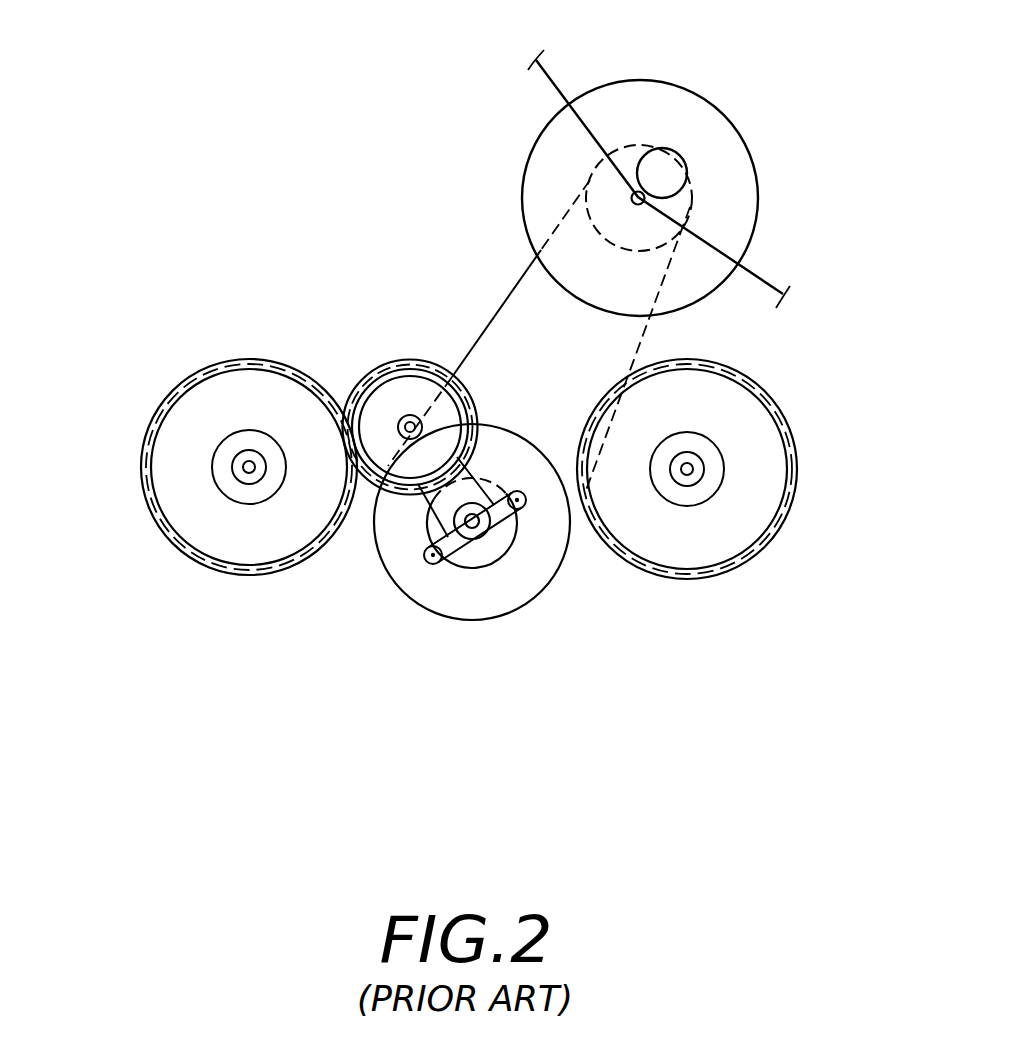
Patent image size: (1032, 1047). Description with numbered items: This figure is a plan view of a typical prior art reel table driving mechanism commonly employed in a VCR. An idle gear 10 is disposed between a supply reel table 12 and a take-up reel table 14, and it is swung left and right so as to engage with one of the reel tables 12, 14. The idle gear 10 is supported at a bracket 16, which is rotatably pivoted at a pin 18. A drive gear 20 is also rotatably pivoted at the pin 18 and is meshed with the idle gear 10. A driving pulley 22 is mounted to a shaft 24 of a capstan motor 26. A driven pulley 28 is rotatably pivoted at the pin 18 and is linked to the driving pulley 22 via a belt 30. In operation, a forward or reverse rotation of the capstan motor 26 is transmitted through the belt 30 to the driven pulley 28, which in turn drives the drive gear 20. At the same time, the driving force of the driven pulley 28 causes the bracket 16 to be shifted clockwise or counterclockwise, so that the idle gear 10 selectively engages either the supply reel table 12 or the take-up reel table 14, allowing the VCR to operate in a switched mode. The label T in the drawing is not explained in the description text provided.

The idle gear 10 is at (400, 359).
The supply reel table 12 is at (152, 518).
The take-up reel table 14 is at (788, 522).
The bracket 16 is at (450, 513).
The pin 18 is at (472, 527).
The drive gear 20 is at (513, 542).
The driving pulley 22 is at (640, 146).
The shaft 24 is at (632, 196).
The capstan motor 26 is at (748, 150).
The driven pulley 28 is at (455, 618).
The belt 30 is at (498, 305).
The tape T is at (753, 273).